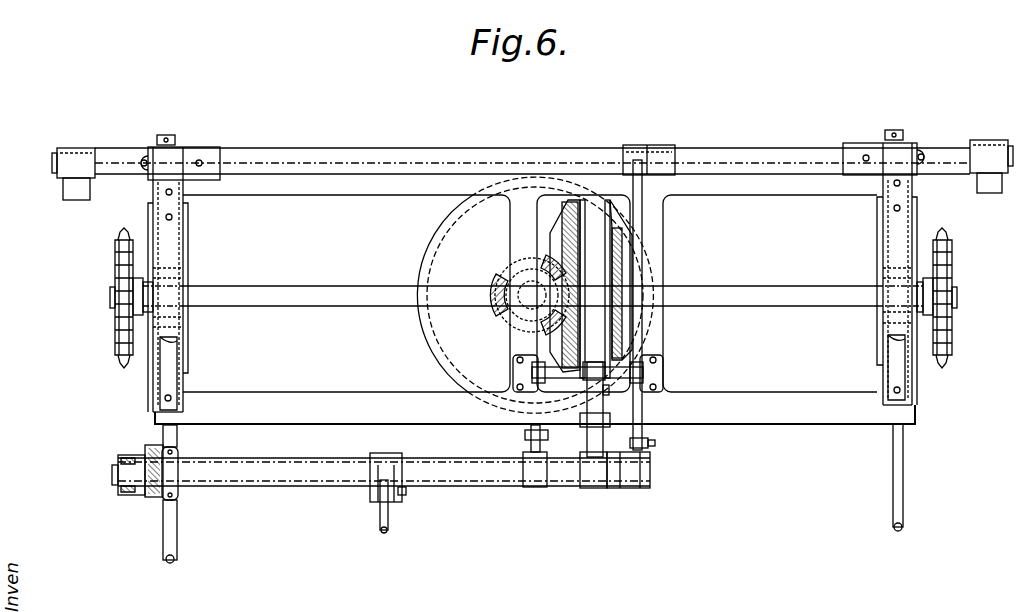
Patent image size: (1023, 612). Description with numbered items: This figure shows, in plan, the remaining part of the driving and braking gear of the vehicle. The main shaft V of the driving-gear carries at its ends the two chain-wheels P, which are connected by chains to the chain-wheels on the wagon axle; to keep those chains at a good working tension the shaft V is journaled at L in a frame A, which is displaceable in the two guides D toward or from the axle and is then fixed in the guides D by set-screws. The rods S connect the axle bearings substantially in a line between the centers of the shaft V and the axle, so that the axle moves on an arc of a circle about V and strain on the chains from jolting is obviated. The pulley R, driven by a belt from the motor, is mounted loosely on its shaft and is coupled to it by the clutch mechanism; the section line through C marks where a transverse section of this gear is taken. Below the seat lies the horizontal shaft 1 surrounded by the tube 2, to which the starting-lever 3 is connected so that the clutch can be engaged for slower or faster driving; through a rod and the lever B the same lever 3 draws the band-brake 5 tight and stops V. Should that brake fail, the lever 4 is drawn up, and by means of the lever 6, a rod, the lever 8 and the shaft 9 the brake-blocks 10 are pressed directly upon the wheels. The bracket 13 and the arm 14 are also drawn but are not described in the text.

The horizontal shaft 1 is at (650, 466).
The tube 2 is at (280, 486).
The starting-lever 3 is at (152, 440).
The lever 4 is at (128, 455).
The band-brake 5 is at (608, 208).
The lever 6 is at (655, 441).
The lever 8 is at (642, 197).
The shaft 9 is at (262, 148).
The brake-blocks 10 is at (532, 177).
The bracket 13 is at (397, 478).
The arm 14 is at (380, 520).
The frame A is at (535, 297).
The lever B is at (603, 390).
The section line point C is at (565, 212).
The guides D is at (160, 380).
The journals L is at (532, 271).
The chain-wheels P is at (531, 298).
The pulley R is at (535, 295).
The rods S is at (911, 487).
The main shaft V is at (258, 306).